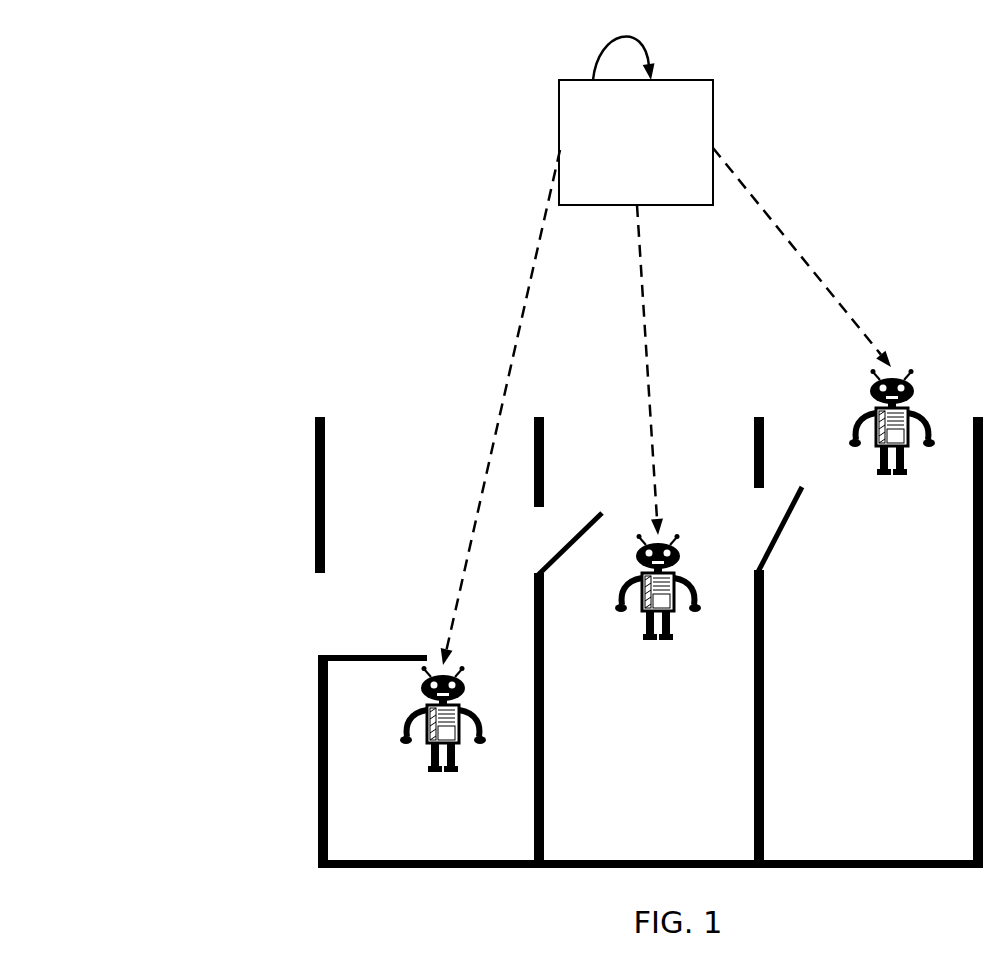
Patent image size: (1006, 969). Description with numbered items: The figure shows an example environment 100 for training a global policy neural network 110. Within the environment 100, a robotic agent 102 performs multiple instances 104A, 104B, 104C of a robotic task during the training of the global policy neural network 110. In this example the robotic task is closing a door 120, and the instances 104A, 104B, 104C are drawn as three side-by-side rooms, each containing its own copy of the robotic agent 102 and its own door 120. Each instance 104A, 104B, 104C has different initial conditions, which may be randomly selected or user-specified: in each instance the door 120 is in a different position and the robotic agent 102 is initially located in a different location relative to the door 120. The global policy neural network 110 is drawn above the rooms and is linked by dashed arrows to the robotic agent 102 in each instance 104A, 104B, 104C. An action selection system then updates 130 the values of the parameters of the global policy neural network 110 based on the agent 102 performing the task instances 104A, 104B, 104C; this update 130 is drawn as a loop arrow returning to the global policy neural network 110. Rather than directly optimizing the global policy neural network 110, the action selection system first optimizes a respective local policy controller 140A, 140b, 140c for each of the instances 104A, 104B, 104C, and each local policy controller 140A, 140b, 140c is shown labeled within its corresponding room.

The environment 100 is at (203, 160).
The robotic agent 102 is at (407, 720).
The instance of the robotic task 104A is at (425, 502).
The instance of the robotic task 104B is at (645, 757).
The instance of the robotic task 104C is at (881, 742).
The global policy neural network 110 is at (619, 194).
The door 120 is at (352, 643).
The update of parameter values 130 is at (598, 52).
The local policy controller 140A is at (399, 436).
The local policy controller 140b is at (687, 432).
The local policy controller 140c is at (852, 616).